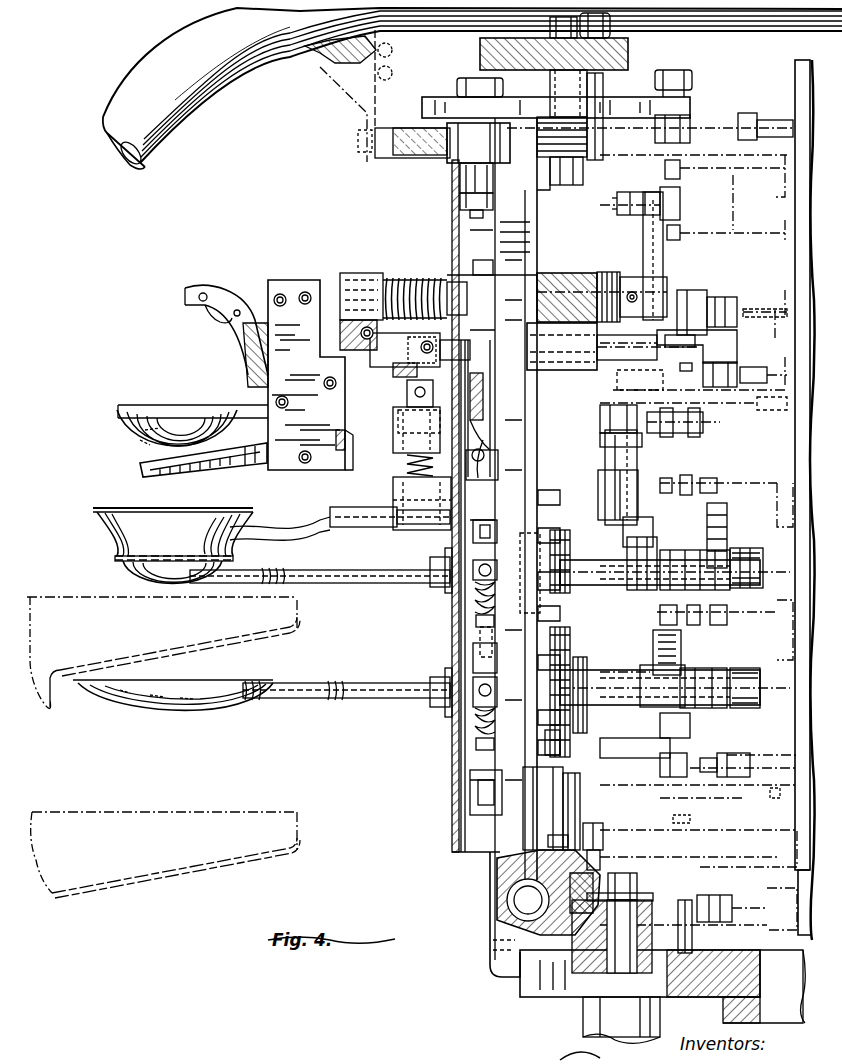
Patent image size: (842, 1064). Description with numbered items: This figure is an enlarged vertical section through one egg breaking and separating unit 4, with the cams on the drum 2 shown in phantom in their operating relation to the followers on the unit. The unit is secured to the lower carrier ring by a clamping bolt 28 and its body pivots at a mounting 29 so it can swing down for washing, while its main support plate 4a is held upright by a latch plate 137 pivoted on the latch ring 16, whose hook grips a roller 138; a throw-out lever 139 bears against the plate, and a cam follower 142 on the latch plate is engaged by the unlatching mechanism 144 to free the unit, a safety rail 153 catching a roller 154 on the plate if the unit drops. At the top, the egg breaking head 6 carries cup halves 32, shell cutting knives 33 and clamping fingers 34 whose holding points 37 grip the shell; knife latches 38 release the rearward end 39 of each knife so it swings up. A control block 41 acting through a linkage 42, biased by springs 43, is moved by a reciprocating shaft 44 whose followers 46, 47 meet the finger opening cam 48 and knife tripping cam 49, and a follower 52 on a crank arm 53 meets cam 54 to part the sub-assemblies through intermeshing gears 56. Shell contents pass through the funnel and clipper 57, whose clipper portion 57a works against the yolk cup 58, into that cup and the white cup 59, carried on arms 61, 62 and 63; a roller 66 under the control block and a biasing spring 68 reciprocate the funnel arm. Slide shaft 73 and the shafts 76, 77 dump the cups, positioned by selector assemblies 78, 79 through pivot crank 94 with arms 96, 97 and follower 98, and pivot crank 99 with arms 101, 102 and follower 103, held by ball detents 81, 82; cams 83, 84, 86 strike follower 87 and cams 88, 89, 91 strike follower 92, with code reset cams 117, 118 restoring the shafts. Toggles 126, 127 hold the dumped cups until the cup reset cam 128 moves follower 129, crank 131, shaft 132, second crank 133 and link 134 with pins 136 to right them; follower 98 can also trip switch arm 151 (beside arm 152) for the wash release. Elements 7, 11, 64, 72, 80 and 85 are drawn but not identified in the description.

The drum 2 is at (795, 447).
The egg breaking and separating unit 4 is at (437, 838).
The main support plate 4a is at (453, 238).
The egg breaking head 6 is at (186, 391).
The tube 7 is at (182, 48).
The base 11 is at (793, 997).
The latch ring 16 is at (480, 52).
The clamping bolt 28 is at (585, 1025).
The pivotal mounting 29 is at (514, 900).
The egg receiving cup halves 32 is at (125, 440).
The shell cutting knives 33 is at (210, 477).
The clamping fingers 34 is at (228, 298).
The holding points 37 is at (218, 316).
The knife latches 38 is at (407, 392).
The rearward end of knife 39 is at (342, 465).
The control block 41 is at (420, 350).
The linkage 42 is at (330, 358).
The springs 43 is at (405, 275).
The reciprocating shaft 44 is at (600, 372).
The cam follower 46 is at (712, 312).
The cam follower 47 is at (703, 375).
The clamping finger opening cam 48 is at (752, 312).
The knife tripping cam 49 is at (752, 367).
The cam follower 52 is at (680, 202).
The crank arm 53 is at (645, 245).
The cam 54 is at (665, 168).
The intermeshing gears 56 is at (598, 272).
The funnel and clipper 57 is at (108, 525).
The clipper portion 57a is at (232, 556).
The yolk cup 58 is at (150, 575).
The white cup 59 is at (185, 708).
The funnel arm 61 is at (305, 515).
The yolk cup arm 62 is at (397, 432).
The white cup arm 63 is at (345, 690).
The pad 64 is at (393, 372).
The roller 66 is at (398, 418).
The biasing spring 68 is at (407, 465).
The pin 72 is at (682, 230).
The slide shaft 73 is at (745, 580).
The shaft 76 is at (762, 567).
The shaft 77 is at (745, 690).
The selector assembly 78 is at (708, 424).
The selector assembly 79 is at (738, 749).
The bar 80 is at (680, 905).
The ball detent 81 is at (708, 555).
The ball detent 82 is at (682, 664).
The good yolk dumping cam 83 is at (668, 478).
The premium yolk dumping cam 84 is at (688, 476).
The stud 85 is at (748, 897).
The inedible yolk dumping cam 86 is at (712, 480).
The follower 87 is at (727, 512).
The good white dumping cam 88 is at (660, 612).
The mixed white dumping cam 89 is at (688, 605).
The inedible white dumping cam 91 is at (712, 605).
The follower 92 is at (672, 640).
The pivot crank 94 is at (600, 475).
The lower arm 96 is at (630, 535).
The upper arm 97 is at (637, 445).
The cam follower 98 is at (600, 412).
The pivot crank 99 is at (598, 630).
The upper arm 101 is at (568, 749).
The lower arm 102 is at (624, 740).
The cam follower 103 is at (685, 760).
The code reset cam 117 is at (775, 413).
The code reset cam 118 is at (755, 800).
The toggle 126 is at (475, 597).
The toggle 127 is at (475, 717).
The cup reset cam 128 is at (600, 858).
The follower 129 is at (603, 834).
The crank 131 is at (562, 825).
The shaft 132 is at (572, 800).
The second crank 133 is at (482, 793).
The link 134 is at (464, 627).
The pins 136 is at (475, 530).
The latch plate 137 is at (628, 108).
The roller 138 is at (460, 92).
The throw-out lever 139 is at (553, 183).
The cam follower 142 is at (690, 124).
The unlatching mechanism 144 is at (760, 112).
The switch operating arm 151 is at (640, 380).
The switch operating arm 152 is at (683, 822).
The safety rail 153 is at (393, 160).
The roller 154 is at (452, 150).